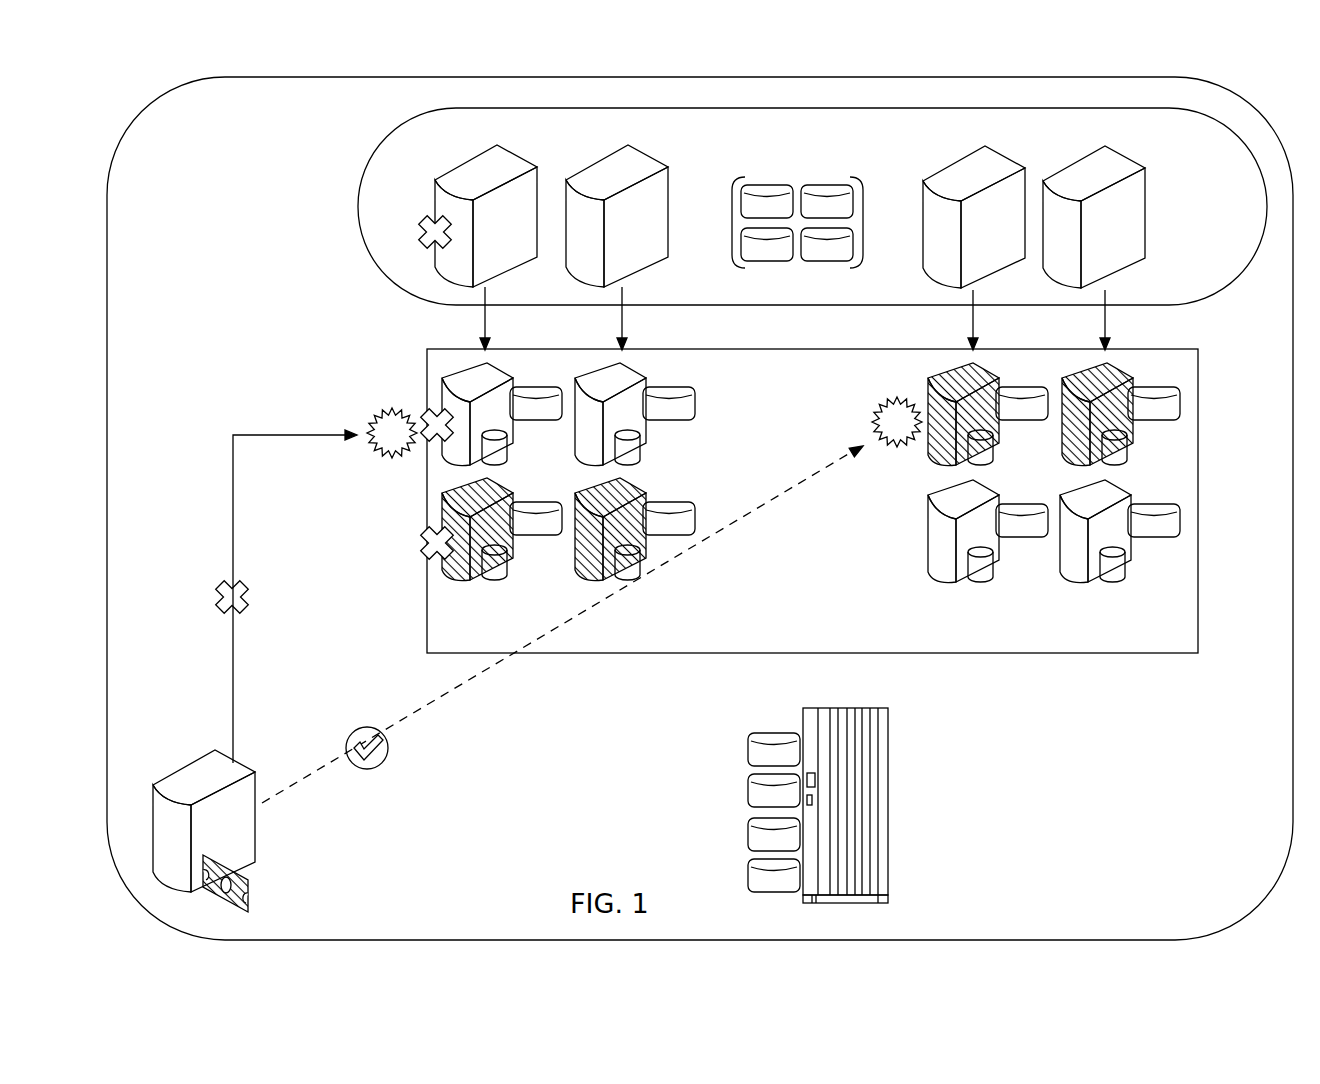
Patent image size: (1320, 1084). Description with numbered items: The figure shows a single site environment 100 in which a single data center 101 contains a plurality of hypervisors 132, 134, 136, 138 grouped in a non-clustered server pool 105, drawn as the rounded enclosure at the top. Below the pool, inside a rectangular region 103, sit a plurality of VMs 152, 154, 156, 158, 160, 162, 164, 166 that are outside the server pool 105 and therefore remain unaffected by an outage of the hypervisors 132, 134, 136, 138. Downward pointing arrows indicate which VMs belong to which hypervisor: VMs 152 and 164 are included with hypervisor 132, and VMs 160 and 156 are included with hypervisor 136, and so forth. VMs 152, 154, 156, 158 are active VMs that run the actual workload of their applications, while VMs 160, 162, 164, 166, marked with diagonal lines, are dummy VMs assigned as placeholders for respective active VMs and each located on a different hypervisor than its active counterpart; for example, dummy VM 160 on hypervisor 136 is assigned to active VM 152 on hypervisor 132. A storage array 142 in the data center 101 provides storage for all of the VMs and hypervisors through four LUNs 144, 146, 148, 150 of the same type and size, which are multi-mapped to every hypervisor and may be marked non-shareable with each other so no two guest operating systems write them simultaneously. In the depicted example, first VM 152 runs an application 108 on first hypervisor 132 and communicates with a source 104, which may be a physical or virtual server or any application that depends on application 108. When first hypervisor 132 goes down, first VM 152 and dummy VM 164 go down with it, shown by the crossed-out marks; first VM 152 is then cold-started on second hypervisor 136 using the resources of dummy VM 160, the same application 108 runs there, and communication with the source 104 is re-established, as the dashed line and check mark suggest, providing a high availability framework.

The single site environment 100 is at (700, 498).
The data center 101 is at (812, 197).
The target computing environment 103 is at (812, 501).
The source 104 is at (204, 831).
The non-clustered server pool 105 is at (797, 194).
The application 108 is at (375, 418).
The first hypervisor 132 is at (486, 216).
The hypervisor 134 is at (617, 216).
The second hypervisor 136 is at (974, 217).
The hypervisor 138 is at (1094, 217).
The storage array 142 is at (845, 793).
The LUN 144 is at (779, 475).
The LUN 146 is at (911, 517).
The LUN 148 is at (779, 518).
The LUN 150 is at (911, 560).
The first VM 152 is at (508, 443).
The active VM 154 is at (646, 443).
The active VM 156 is at (948, 582).
The active VM 158 is at (1082, 580).
The dummy VM 160 is at (932, 458).
The dummy VM 162 is at (1132, 430).
The dummy VM 164 is at (463, 580).
The dummy VM 166 is at (570, 562).